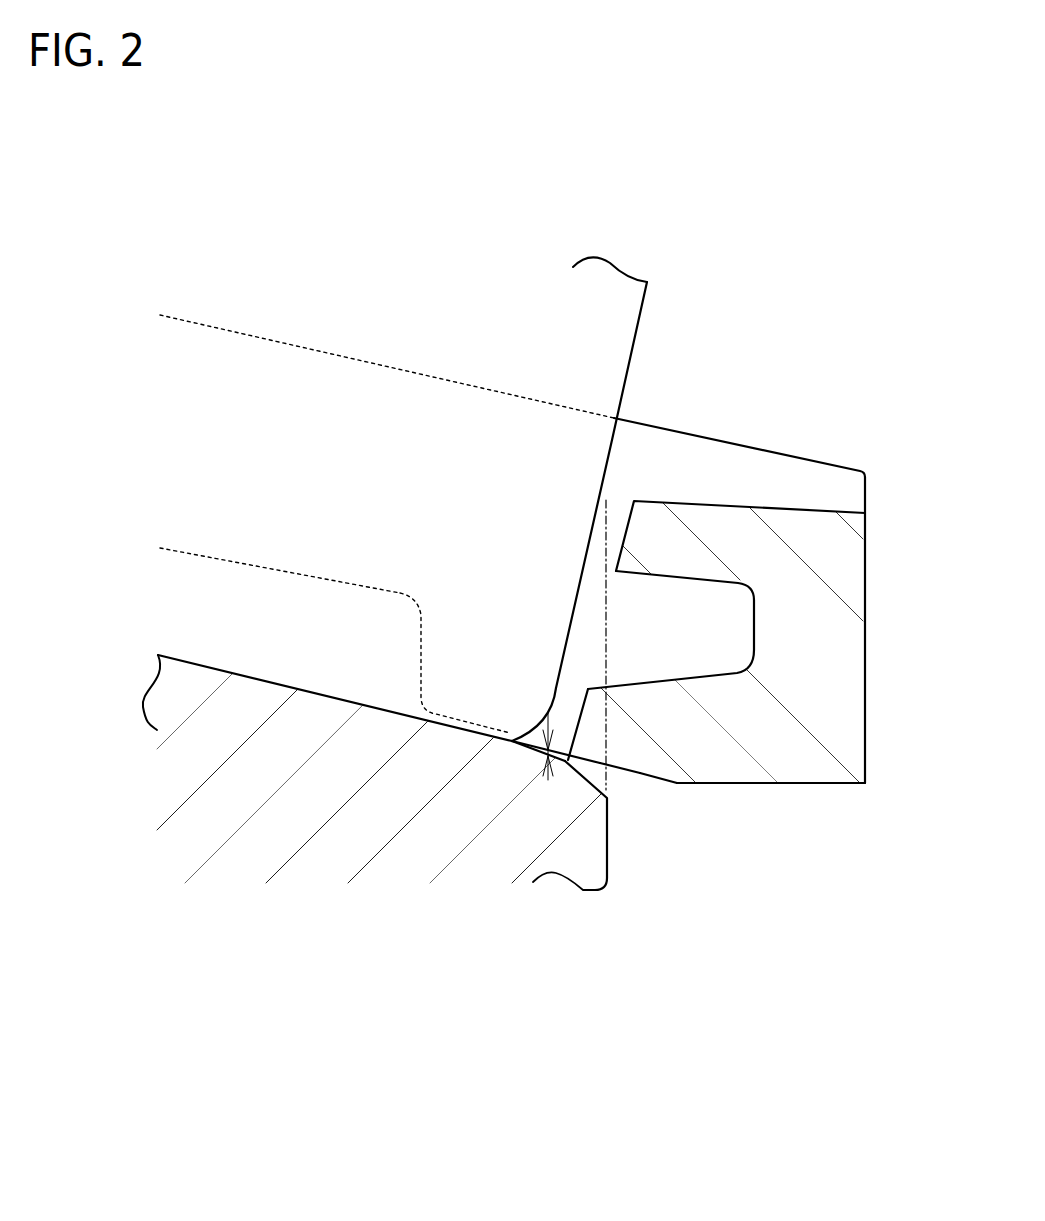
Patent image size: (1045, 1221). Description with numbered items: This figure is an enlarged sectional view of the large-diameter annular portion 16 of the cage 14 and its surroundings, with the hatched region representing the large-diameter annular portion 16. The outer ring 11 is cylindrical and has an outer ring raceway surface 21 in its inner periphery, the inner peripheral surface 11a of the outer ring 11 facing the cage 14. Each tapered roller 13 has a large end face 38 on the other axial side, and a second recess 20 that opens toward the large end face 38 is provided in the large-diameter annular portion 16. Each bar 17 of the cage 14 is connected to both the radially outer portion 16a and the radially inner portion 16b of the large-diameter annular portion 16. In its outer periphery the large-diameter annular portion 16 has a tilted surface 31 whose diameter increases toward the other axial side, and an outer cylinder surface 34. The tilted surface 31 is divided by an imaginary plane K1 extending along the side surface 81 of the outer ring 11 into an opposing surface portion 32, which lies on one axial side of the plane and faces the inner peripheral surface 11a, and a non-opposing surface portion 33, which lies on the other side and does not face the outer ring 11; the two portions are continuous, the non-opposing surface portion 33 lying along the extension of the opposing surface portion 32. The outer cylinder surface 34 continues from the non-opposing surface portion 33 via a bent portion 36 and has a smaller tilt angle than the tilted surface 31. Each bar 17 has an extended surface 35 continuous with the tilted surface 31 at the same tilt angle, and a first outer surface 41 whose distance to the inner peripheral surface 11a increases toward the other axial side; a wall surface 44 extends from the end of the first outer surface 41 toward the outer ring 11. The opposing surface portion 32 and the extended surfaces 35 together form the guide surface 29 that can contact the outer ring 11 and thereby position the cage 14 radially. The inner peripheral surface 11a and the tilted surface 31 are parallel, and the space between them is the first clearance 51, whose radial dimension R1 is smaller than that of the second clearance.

The outer ring 11 is at (398, 782).
The inner peripheral surface of the outer ring 11a is at (212, 670).
The tapered roller 13 is at (306, 694).
The cage 14 is at (754, 629).
The large-diameter annular portion 16 is at (754, 697).
The radially outer portion of the large-diameter annular portion 16a is at (843, 751).
The radially inner portion of the large-diameter annular portion 16b is at (840, 540).
The bar 17 is at (692, 434).
The second recess 20 is at (753, 627).
The outer ring raceway surface 21 is at (387, 524).
The guide surface 29 is at (516, 743).
The tilted surface 31 is at (559, 651).
The opposing surface portion 32 is at (572, 748).
The non-opposing surface portion 33 is at (662, 783).
The outer cylinder surface 34 is at (805, 785).
The extended surface 35 is at (453, 740).
The bent portion 36 is at (682, 790).
The large end face 38 is at (610, 448).
The first outer surface 41 is at (297, 577).
The wall surface 44 is at (420, 661).
The first clearance 51 is at (613, 773).
The side surface 81 is at (608, 842).
The imaginary plane K1 is at (603, 590).
The radial dimension of the first clearance R1 is at (533, 752).